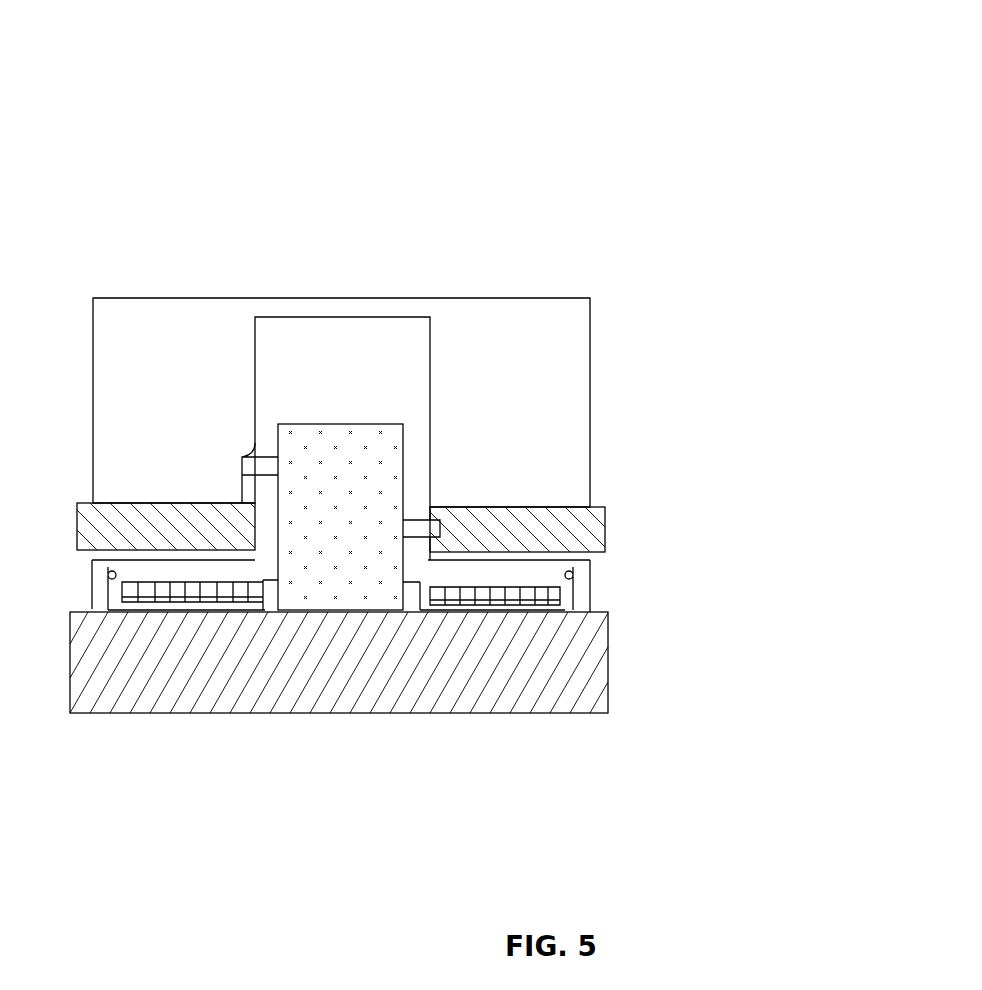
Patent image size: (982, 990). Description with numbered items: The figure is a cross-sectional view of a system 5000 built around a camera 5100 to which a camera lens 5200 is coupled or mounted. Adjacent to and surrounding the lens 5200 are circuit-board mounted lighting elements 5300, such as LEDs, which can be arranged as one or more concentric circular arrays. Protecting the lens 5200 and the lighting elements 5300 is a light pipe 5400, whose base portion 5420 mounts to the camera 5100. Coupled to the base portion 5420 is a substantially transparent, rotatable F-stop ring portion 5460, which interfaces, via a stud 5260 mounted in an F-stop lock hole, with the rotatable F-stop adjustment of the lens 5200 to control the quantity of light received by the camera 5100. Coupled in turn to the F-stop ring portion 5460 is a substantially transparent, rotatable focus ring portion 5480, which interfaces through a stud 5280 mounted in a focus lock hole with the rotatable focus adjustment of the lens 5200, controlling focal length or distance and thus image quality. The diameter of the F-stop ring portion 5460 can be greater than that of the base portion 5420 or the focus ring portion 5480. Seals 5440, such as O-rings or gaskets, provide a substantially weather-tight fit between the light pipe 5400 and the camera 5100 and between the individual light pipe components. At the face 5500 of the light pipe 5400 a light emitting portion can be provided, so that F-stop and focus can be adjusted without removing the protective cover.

The system 5000 is at (327, 31).
The camera 5100 is at (411, 658).
The camera lens 5200 is at (398, 638).
The stud 5260 is at (461, 391).
The stud 5280 is at (341, 323).
The lighting elements 5300 is at (564, 695).
The light pipe 5400 is at (722, 280).
The base portion 5420 is at (336, 743).
The seals 5440 is at (469, 582).
The F-stop ring portion 5460 is at (487, 516).
The focus ring portion 5480 is at (722, 402).
The face 5500 is at (341, 185).